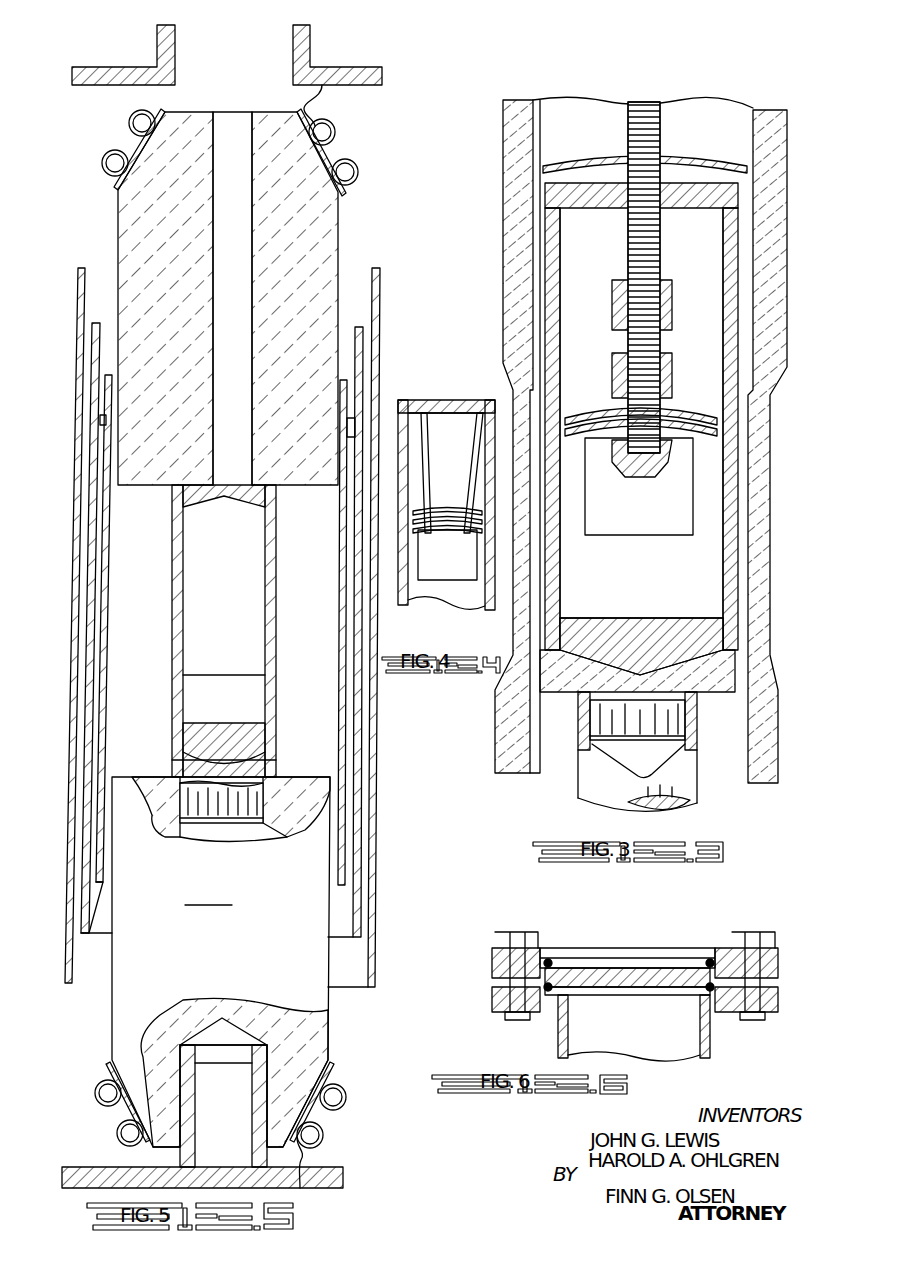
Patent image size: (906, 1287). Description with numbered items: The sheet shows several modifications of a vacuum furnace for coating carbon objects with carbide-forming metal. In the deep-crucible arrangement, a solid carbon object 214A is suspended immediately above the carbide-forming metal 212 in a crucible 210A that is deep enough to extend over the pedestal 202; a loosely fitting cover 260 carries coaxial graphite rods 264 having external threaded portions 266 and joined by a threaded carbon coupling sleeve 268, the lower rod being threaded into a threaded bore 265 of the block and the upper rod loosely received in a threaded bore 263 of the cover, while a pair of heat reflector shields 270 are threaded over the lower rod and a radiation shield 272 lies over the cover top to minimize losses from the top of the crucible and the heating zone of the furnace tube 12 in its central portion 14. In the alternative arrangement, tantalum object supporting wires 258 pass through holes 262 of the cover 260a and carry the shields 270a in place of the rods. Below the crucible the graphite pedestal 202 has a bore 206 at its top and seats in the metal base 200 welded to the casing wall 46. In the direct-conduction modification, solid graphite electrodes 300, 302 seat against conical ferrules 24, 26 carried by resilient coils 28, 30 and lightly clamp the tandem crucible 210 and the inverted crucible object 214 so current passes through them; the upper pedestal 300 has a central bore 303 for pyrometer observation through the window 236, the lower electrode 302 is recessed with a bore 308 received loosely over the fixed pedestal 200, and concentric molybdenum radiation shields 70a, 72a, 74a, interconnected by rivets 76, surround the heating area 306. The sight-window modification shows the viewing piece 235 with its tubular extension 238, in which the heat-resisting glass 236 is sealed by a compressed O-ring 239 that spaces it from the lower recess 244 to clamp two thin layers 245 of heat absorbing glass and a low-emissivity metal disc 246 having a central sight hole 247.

In FIG. 3, the tubular resistance element 12 is at (787, 262).
In FIG. 3, the central longitudinal portion 14 is at (780, 482).
In FIG. 5, the metallic conducting collar 24 is at (346, 194).
In FIG. 5, the metallic conducting collar 26 is at (334, 1068).
In FIG. 5, the conically spirally wound spring coil 28 is at (349, 170).
In FIG. 5, the conically spirally wound spring coil 30 is at (347, 1098).
In FIG. 5, the casing wall 46 is at (323, 1171).
In FIG. 5, the concentric radiation shield 70a is at (343, 840).
In FIG. 5, the concentric radiation shield 72a is at (358, 815).
In FIG. 5, the concentric radiation shield 74a is at (378, 794).
In FIG. 5, the rivet 76 is at (104, 435).
In FIG. 5, the metal base 200 is at (200, 1152).
In FIG. 3, the graphite pedestal 202 is at (690, 808).
In FIG. 3, the bore 206 is at (665, 721).
In FIG. 5, the graphite crucible 210 is at (270, 762).
In FIG. 4, the crucible 210A is at (500, 588).
In FIG. 3, the crucible 210A is at (738, 520).
In FIG. 5, the high boiling point metal 212 is at (224, 722).
In FIG. 3, the high boiling point metal 212 is at (670, 635).
In FIG. 5, the object 214 is at (276, 632).
In FIG. 4, the object 214A is at (452, 560).
In FIG. 3, the object 214A is at (648, 520).
In FIG. 6, the viewing piece 235 is at (597, 935).
In FIG. 6, the window 236 is at (640, 950).
In FIG. 6, the tubular extension 238 is at (688, 1060).
In FIG. 6, the rubber gasket 239 is at (710, 997).
In FIG. 6, the recess 244 is at (540, 997).
In FIG. 6, the thin layer of heat absorbing glass 245 is at (590, 996).
In FIG. 6, the thin metal disc 246 is at (678, 995).
In FIG. 6, the central sight hole 247 is at (628, 992).
In FIG. 4, the object supporting wire 258 is at (452, 473).
In FIG. 3, the cover 260 is at (605, 210).
In FIG. 4, the cover 260a is at (430, 398).
In FIG. 4, the hole 262 is at (461, 398).
In FIG. 3, the threaded bore 263 is at (632, 200).
In FIG. 3, the coaxial graphite rod 264 is at (660, 258).
In FIG. 3, the threaded bore 265 is at (656, 478).
In FIG. 3, the external threaded portion 266 is at (660, 239).
In FIG. 3, the threaded carbon coupling sleeve 268 is at (672, 299).
In FIG. 3, the heat reflector shield 270 is at (786, 425).
In FIG. 4, the heat reflector shield 270a is at (445, 508).
In FIG. 3, the radiation shield 272 is at (714, 147).
In FIG. 5, the upper graphite electrode 300 is at (145, 470).
In FIG. 5, the lower graphite electrode 302 is at (268, 926).
In FIG. 5, the central bore 303 is at (251, 347).
In FIG. 5, the heating area 306 is at (325, 746).
In FIG. 5, the bore 308 is at (247, 1054).